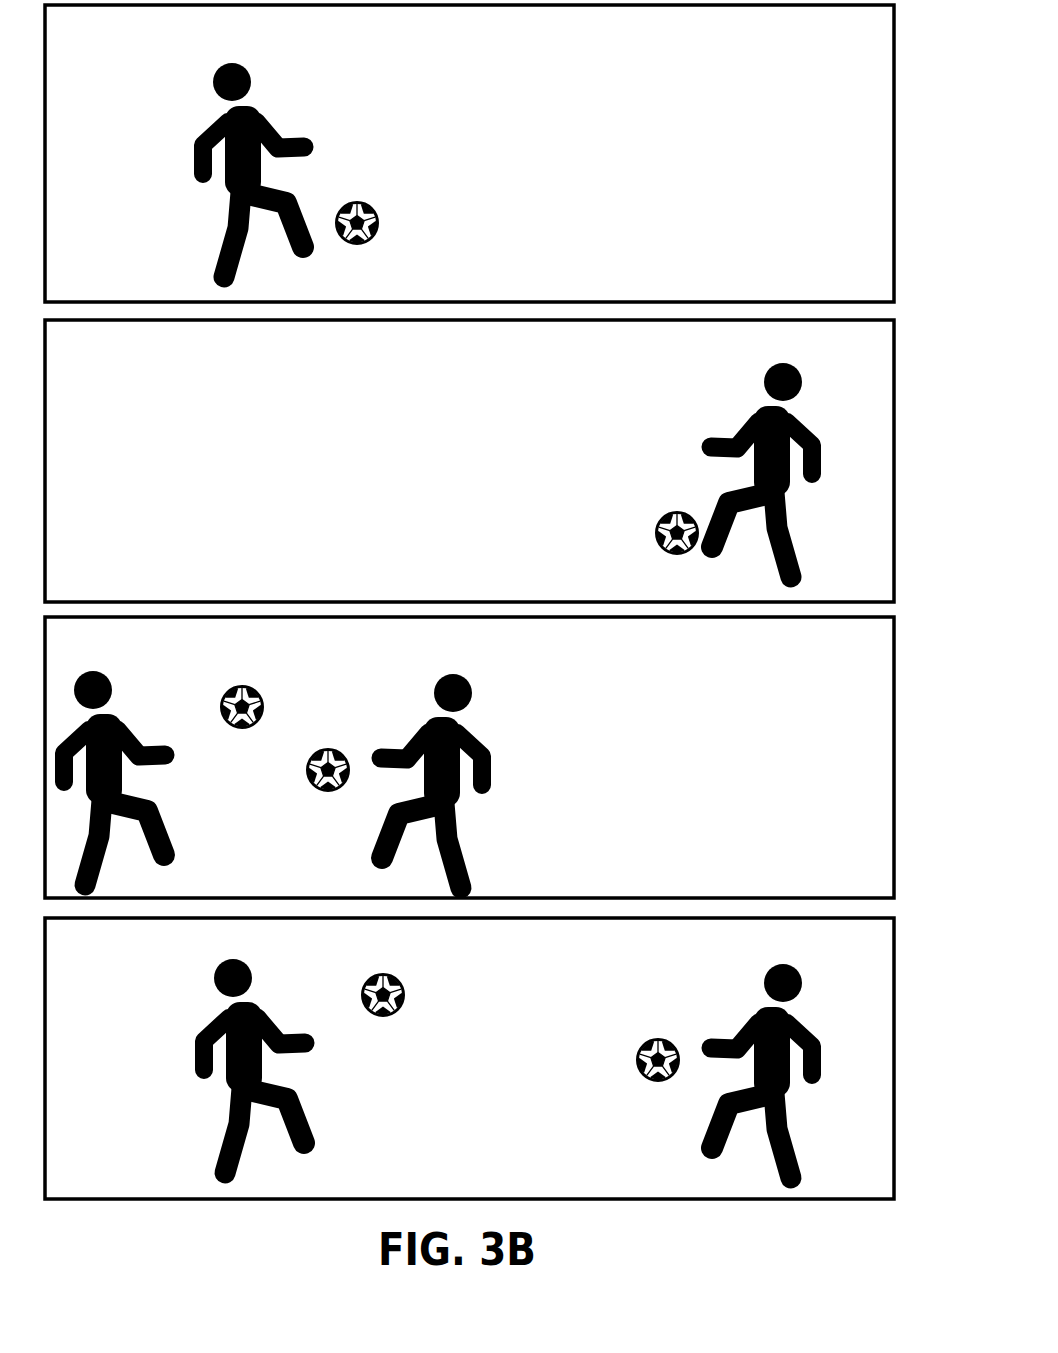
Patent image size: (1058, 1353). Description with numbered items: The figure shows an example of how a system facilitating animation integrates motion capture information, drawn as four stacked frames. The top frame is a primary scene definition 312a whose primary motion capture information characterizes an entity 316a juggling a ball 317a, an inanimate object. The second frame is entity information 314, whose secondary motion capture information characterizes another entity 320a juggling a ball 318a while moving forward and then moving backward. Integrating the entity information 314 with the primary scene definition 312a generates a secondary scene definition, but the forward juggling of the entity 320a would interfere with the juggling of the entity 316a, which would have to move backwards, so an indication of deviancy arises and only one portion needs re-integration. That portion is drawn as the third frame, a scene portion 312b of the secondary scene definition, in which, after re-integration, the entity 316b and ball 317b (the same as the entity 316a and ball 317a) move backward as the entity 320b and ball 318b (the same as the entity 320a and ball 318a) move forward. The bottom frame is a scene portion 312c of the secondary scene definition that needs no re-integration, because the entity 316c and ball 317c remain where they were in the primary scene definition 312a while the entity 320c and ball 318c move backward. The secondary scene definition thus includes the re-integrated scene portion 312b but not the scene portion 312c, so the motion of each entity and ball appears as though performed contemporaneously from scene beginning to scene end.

The primary scene definition 312a is at (888, 182).
The entity information 314 is at (888, 460).
The scene portion of the secondary scene definition 312b is at (888, 748).
The scene portion of the secondary scene definition 312c is at (888, 1047).
The entity 316a is at (236, 62).
The entity 316b is at (100, 669).
The entity 316c is at (240, 958).
The ball 317a is at (367, 201).
The ball 317b is at (240, 684).
The ball 317c is at (380, 973).
The ball 318a is at (660, 513).
The ball 318b is at (322, 792).
The ball 318c is at (652, 1082).
The entity 320a is at (780, 362).
The entity 320b is at (448, 674).
The entity 320c is at (778, 964).